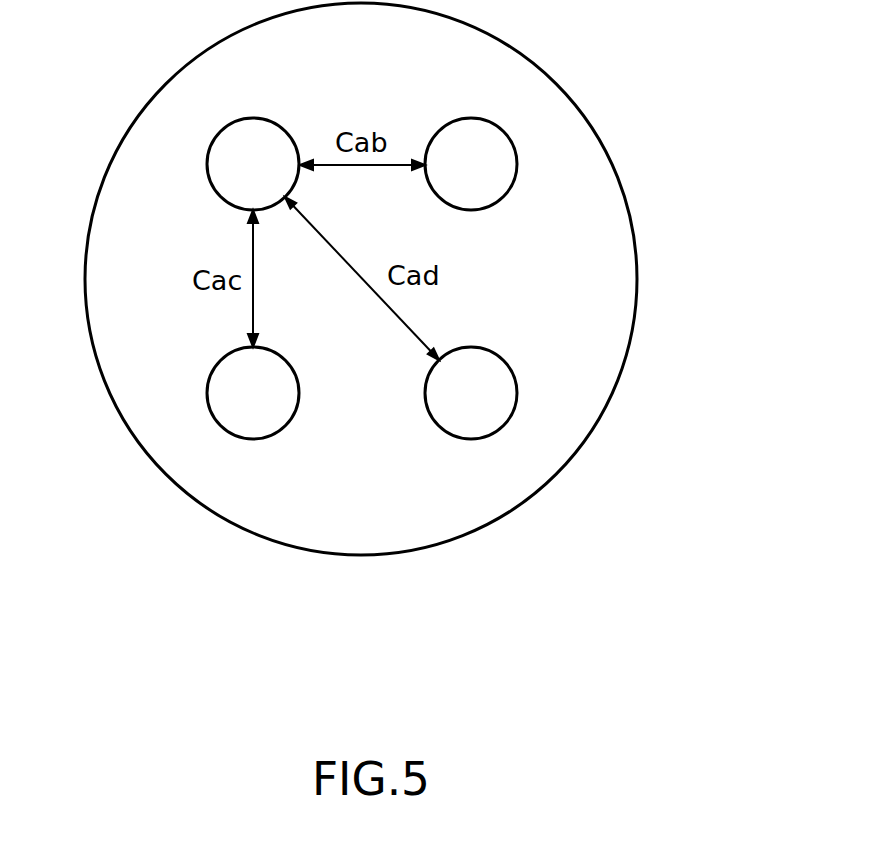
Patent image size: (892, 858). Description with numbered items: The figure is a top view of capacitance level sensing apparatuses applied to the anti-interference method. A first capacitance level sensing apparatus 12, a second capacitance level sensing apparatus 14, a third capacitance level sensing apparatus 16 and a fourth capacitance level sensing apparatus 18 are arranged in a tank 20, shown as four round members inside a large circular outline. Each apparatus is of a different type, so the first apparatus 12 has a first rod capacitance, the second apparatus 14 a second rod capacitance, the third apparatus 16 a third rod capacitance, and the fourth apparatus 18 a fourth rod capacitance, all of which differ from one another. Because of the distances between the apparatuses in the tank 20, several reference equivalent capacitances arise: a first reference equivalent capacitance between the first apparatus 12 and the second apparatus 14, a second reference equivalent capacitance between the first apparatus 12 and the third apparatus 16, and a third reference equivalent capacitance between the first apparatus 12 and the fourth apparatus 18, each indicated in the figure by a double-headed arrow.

The first capacitance level sensing apparatus 12 is at (240, 148).
The second capacitance level sensing apparatus 14 is at (485, 153).
The third capacitance level sensing apparatus 16 is at (235, 400).
The fourth capacitance level sensing apparatus 18 is at (490, 393).
The tank 20 is at (615, 270).